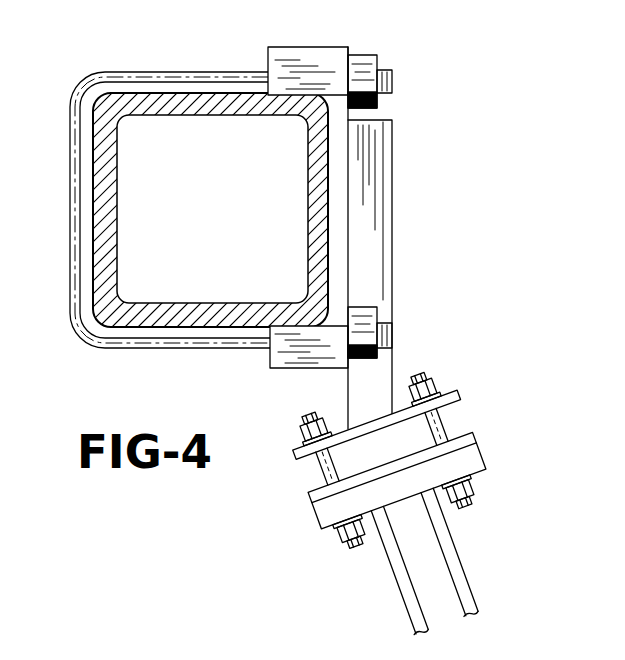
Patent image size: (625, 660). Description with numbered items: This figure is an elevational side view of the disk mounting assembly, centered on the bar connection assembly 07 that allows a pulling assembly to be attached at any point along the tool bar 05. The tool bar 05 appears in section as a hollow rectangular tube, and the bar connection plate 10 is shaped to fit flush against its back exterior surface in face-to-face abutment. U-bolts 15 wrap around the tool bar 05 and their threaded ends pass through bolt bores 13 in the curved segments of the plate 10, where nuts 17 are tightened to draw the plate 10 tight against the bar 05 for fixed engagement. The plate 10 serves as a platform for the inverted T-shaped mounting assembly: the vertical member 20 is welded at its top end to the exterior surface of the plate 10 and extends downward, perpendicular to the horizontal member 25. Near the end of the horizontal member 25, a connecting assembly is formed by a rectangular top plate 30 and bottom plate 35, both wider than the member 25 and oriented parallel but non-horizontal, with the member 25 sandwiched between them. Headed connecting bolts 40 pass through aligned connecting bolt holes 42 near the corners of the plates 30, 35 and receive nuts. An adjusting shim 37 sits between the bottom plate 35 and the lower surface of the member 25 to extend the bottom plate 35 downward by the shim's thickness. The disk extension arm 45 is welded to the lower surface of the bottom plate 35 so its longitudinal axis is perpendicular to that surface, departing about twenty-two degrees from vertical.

The bar connection assembly 07 is at (453, 142).
The U-bolts 15 is at (192, 79).
The tool bar 05 is at (234, 114).
The bolt bores 13 is at (326, 58).
The bar connection plate 10 is at (295, 360).
The vertical member 20 is at (391, 232).
The nuts 17 is at (377, 56).
The top plate 30 is at (462, 399).
The adjusting shim 37 is at (494, 458).
The horizontal member 25 is at (400, 462).
The headed connecting bolts 40 is at (316, 486).
The connecting bolt holes 42 is at (445, 393).
The disk extension arm 45 is at (455, 557).
The bottom plate 35 is at (306, 521).